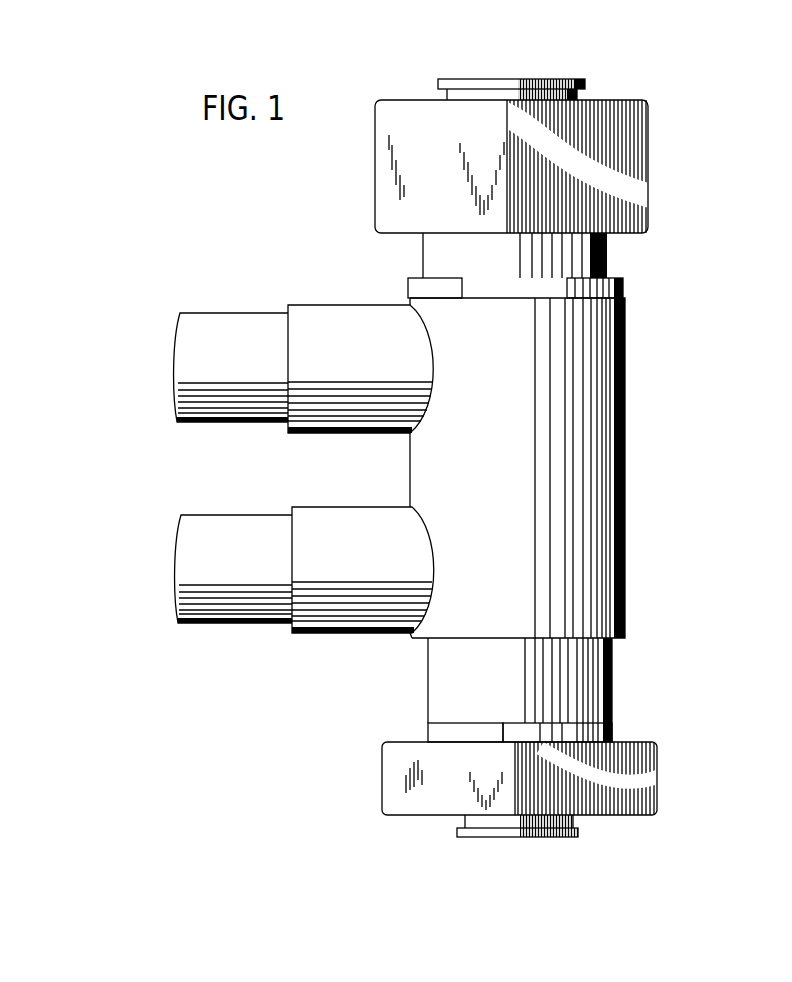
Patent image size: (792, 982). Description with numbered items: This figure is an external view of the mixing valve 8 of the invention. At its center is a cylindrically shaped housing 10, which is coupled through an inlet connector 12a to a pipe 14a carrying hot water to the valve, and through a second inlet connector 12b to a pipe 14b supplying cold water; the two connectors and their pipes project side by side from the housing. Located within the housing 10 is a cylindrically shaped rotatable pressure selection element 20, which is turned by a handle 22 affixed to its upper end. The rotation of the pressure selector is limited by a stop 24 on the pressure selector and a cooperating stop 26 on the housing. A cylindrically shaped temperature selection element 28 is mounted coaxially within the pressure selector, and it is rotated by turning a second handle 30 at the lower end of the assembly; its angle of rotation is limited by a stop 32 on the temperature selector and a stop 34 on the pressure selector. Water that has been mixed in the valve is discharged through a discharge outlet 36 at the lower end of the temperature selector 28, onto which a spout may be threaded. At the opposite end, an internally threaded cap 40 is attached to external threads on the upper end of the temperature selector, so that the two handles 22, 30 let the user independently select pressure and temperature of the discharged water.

The mixing valve 8 is at (212, 257).
The housing 10 is at (603, 478).
The inlet connector 12a is at (337, 312).
The inlet connector 12b is at (347, 525).
The pipe 14a is at (220, 373).
The pipe 14b is at (220, 592).
The pressure selection element 20 is at (624, 258).
The handle 22 is at (633, 188).
The stop 24 is at (415, 288).
The stop 26 is at (594, 288).
The temperature selection element 28 is at (624, 679).
The handle 30 is at (393, 779).
The stop 32 is at (432, 733).
The stop 34 is at (597, 731).
The discharge outlet 36 is at (483, 833).
The internally threaded cap 40 is at (560, 80).